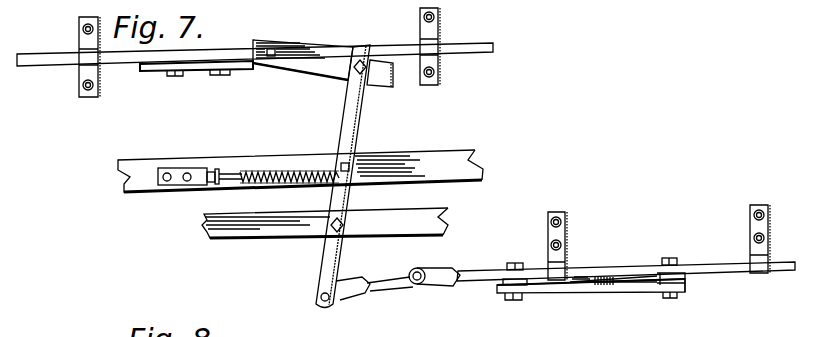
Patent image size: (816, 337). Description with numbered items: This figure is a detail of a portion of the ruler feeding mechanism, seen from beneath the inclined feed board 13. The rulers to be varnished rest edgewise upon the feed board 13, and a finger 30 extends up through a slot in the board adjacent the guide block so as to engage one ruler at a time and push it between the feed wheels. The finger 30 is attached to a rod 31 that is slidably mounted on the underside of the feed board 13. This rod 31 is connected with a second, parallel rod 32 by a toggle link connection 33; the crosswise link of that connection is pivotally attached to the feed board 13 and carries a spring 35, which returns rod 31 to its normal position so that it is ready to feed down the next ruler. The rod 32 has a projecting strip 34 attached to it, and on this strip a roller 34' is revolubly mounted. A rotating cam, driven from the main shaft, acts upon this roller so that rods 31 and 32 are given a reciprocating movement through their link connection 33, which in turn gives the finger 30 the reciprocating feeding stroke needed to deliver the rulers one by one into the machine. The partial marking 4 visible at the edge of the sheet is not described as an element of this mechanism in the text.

The rod 31 is at (50, 66).
The finger 30 is at (198, 72).
The toggle link connection 33 is at (366, 113).
The spring 35 is at (281, 169).
The feed board 13 is at (447, 210).
The rod 32 is at (708, 264).
The projecting strip 34 is at (591, 300).
The roller 34' is at (613, 259).
The numeral 4 is at (479, 326).